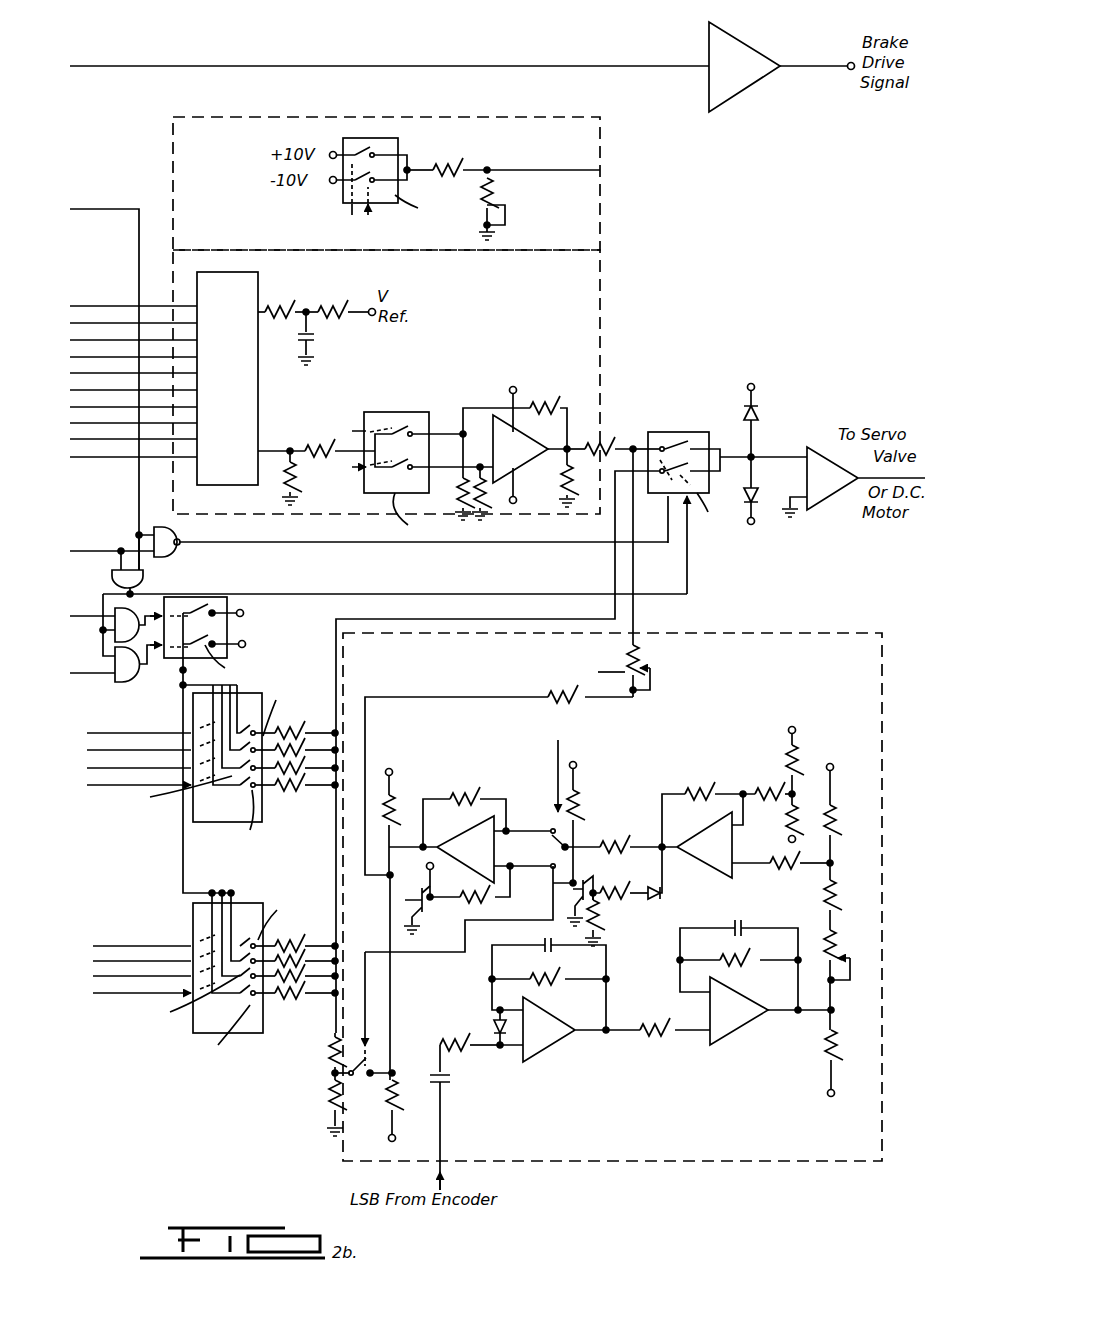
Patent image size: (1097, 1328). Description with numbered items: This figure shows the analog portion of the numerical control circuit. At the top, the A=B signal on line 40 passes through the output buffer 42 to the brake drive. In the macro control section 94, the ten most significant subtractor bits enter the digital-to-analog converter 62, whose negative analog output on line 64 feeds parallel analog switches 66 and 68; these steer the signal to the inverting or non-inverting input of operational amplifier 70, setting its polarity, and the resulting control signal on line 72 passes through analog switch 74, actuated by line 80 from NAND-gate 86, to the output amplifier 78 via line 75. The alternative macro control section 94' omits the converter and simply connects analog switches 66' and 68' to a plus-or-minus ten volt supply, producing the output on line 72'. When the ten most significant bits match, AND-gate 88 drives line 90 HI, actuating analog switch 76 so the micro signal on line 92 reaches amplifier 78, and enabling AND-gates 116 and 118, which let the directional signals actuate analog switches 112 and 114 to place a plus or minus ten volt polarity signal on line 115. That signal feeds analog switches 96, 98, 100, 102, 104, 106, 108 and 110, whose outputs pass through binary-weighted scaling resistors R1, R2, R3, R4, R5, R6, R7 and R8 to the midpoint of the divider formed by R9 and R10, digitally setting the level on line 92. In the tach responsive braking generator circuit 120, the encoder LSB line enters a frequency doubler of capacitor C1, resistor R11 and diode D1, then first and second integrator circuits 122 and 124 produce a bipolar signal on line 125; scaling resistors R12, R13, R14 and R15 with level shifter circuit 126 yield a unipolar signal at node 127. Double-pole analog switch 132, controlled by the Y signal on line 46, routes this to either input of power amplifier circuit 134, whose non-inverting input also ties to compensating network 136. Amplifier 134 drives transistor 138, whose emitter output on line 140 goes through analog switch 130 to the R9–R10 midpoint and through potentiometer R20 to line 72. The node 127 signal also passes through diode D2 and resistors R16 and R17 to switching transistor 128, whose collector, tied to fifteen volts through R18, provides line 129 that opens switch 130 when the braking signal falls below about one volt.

The A=B output line 40 is at (273, 66).
The output buffer 42 is at (738, 94).
The A B output line 46 is at (560, 744).
The digital-to-analog converter 62 is at (258, 391).
The analog output line 64 is at (273, 450).
The analog switch 66 is at (384, 430).
The analog switch 66' is at (357, 159).
The analog switch 68 is at (413, 514).
The analog switch 68' is at (416, 210).
The operational amplifier 70 is at (493, 447).
The control signal line 72 is at (597, 452).
The output line 72' is at (503, 199).
The analog switch 74 is at (688, 432).
The control signal line 75 is at (783, 456).
The analog switch 76 is at (712, 509).
The output amplifier 78 is at (810, 448).
The NAND-gate output line 80 is at (465, 545).
The NAND-gate 86 is at (181, 545).
The AND-gate 88 is at (112, 581).
The AND-gate output line 90 is at (318, 594).
The micro section output line 92 is at (615, 562).
The macro control section 94 is at (412, 382).
The alternative macro control section 94' is at (415, 183).
The analog switch 96 is at (259, 716).
The analog switch 98 is at (280, 707).
The analog switch 100 is at (175, 793).
The analog switch 102 is at (241, 818).
The analog switch 104 is at (252, 938).
The analog switch 106 is at (282, 913).
The analog switch 108 is at (188, 999).
The analog switch 110 is at (221, 1032).
The analog switch 112 is at (210, 600).
The analog switch 114 is at (231, 661).
The polarity signal line 115 is at (182, 852).
The AND-gate 116 is at (112, 632).
The AND-gate 118 is at (118, 685).
The tach responsive braking generator circuit 120 is at (705, 1165).
The first integrator circuit 122 is at (562, 1048).
The second integrator circuit 124 is at (718, 1050).
The integrator output line 125 is at (800, 1016).
The level shifter circuit 126 is at (718, 788).
The node 127 is at (660, 845).
The switching transistor 128 is at (584, 883).
The output signal line 129 is at (403, 953).
The analog switch 130 is at (365, 1085).
The double-pole analog switch 132 is at (545, 845).
The operational power amplifier circuit 134 is at (468, 788).
The compensating network 136 is at (426, 908).
The transistor 138 is at (393, 830).
The braking signal line 140 is at (368, 727).
The scaling resistor R1 is at (283, 730).
The scaling resistor R2 is at (308, 748).
The scaling resistor R3 is at (298, 772).
The scaling resistor R4 is at (282, 790).
The scaling resistor R5 is at (283, 944).
The scaling resistor R6 is at (308, 958).
The scaling resistor R7 is at (299, 982).
The scaling resistor R8 is at (286, 1010).
The voltage divider resistor R9 is at (328, 1058).
The voltage divider resistor R10 is at (330, 1100).
The resistor R11 is at (455, 1045).
The scaling resistor R12 is at (835, 1038).
The scaling resistor R13 is at (836, 936).
The scaling resistor R14 is at (835, 882).
The scaling resistor R15 is at (835, 832).
The voltage divider resistor R16 is at (613, 867).
The voltage divider resistor R17 is at (600, 918).
The resistor R18 is at (582, 814).
The potentiometer R20 is at (656, 678).
The capacitor C1 is at (447, 1078).
The diode D1 is at (494, 1028).
The diode D2 is at (656, 896).